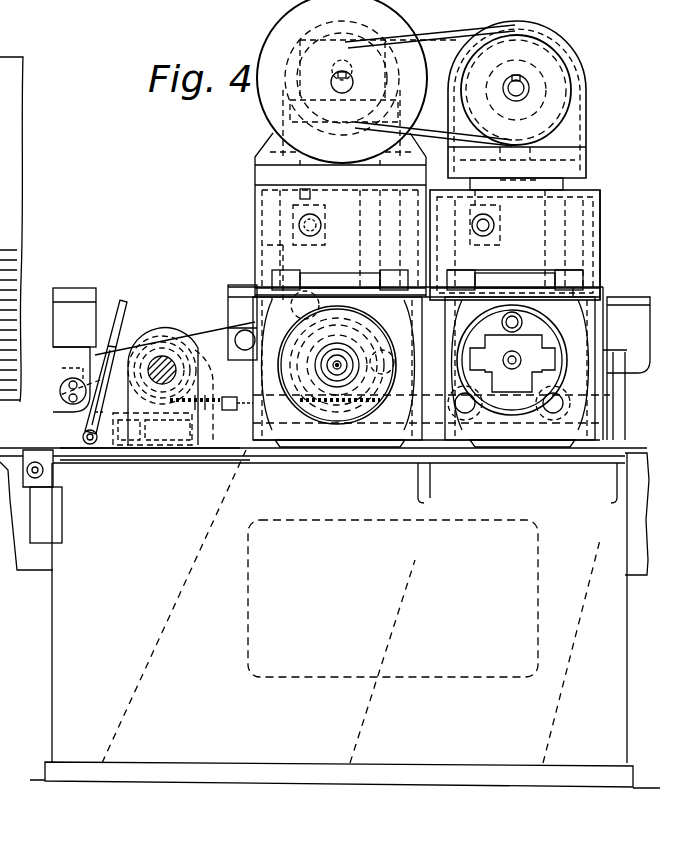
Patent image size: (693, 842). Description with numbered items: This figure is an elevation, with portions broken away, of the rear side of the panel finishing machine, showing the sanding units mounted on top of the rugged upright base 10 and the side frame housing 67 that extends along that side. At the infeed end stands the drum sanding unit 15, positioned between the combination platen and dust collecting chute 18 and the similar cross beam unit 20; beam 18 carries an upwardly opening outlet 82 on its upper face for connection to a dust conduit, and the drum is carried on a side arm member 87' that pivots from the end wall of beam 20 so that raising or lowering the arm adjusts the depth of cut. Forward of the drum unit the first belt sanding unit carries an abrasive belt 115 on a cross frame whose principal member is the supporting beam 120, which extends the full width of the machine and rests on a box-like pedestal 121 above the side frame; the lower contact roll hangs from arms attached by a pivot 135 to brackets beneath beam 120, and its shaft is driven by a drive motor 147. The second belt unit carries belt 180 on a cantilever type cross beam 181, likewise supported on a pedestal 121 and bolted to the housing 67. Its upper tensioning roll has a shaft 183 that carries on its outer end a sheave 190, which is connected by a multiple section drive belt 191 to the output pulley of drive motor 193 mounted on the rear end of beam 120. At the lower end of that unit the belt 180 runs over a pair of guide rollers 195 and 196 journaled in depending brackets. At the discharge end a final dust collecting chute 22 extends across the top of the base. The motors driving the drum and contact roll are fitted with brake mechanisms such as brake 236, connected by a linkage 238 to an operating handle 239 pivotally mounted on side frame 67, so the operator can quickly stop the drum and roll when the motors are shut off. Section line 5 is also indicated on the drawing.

The drive motor 193 is at (310, 50).
The multiple section drive belt 191 is at (437, 36).
The upright base 10 is at (538, 5).
The sheave 190 is at (556, 62).
The roll shaft 183 is at (522, 88).
The abrasive belt 115 is at (256, 176).
The supporting beam 120 is at (257, 223).
The belt 180 is at (587, 182).
The cantilever type cross beam 181 is at (601, 240).
The box-like pedestal 121 is at (256, 292).
The combination platen and dust collecting chute 20 is at (240, 288).
The final dust collecting chute 22 is at (640, 324).
The combination work engaging platen and dust collecting chute 18 is at (73, 287).
The upwardly opening outlet 82 is at (100, 290).
The operating handle 239 is at (128, 300).
The brake mechanism 236 is at (152, 310).
The drum sanding unit 15 is at (165, 318).
The side arm member 87' is at (157, 345).
The pivot 135 is at (392, 330).
The drive motor 147 is at (335, 412).
The linkage 238 is at (230, 413).
The guide roller 195 is at (470, 420).
The guide roller 196 is at (553, 420).
The section line arrow 5 is at (659, 488).
The housing 67 is at (627, 600).